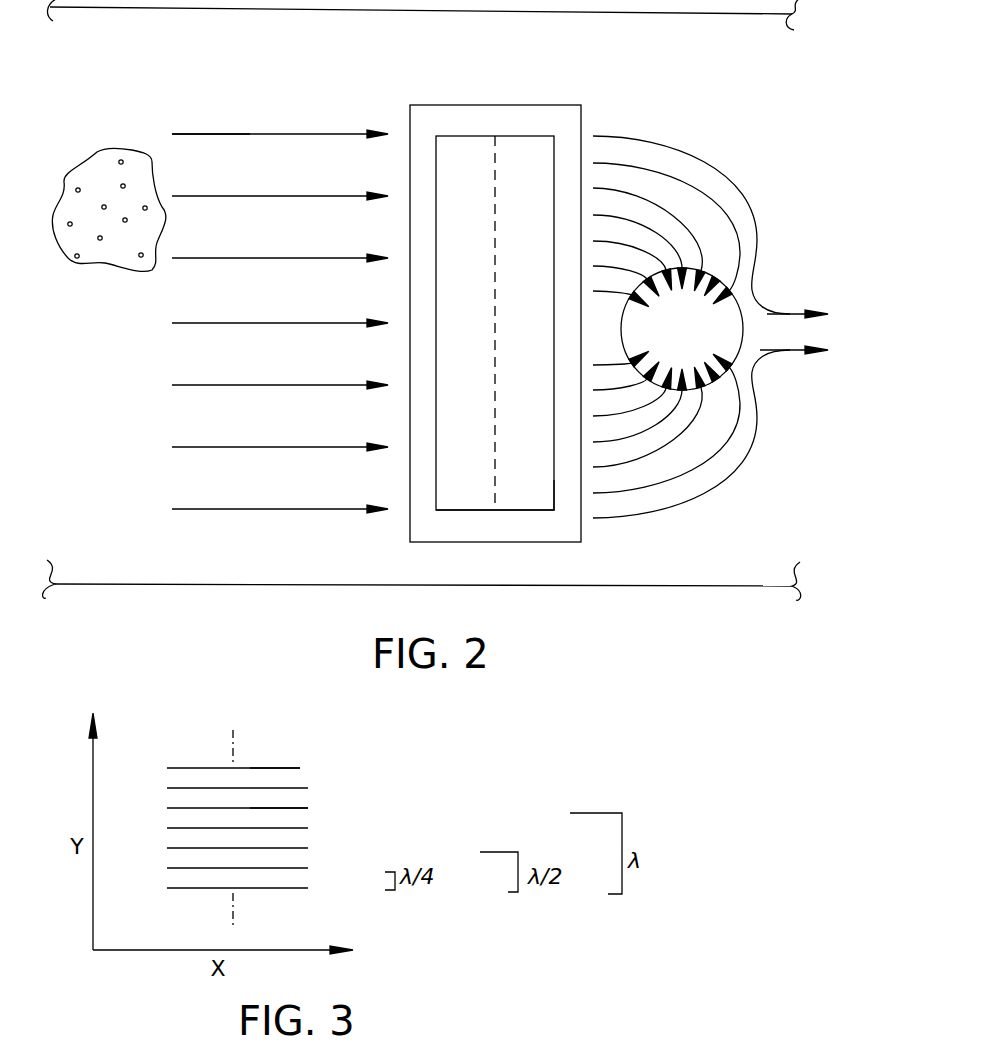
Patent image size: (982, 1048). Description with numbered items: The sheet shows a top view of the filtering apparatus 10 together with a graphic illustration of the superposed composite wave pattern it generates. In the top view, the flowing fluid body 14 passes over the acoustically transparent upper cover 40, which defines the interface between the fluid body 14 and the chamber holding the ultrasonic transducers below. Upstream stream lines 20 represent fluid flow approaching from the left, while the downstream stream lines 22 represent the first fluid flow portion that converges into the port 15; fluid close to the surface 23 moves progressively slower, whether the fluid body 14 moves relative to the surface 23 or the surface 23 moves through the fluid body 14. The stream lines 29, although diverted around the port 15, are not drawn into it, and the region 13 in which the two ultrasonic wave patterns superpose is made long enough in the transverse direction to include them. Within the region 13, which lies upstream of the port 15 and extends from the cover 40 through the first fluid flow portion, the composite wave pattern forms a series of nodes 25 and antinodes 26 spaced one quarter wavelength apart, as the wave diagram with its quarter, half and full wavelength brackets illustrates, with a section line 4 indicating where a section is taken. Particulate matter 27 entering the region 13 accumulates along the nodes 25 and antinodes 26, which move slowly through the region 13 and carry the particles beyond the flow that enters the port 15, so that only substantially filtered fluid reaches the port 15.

In FIG. 2, the filtering apparatus 10 is at (566, 110).
In FIG. 2, the region 13 is at (572, 518).
In FIG. 2, the fluid body 14 is at (625, 136).
In FIG. 2, the port 15 is at (742, 340).
In FIG. 2, the upstream stream lines 20 is at (481, 325).
In FIG. 2, the downstream stream lines 22 is at (735, 304).
In FIG. 2, the surface 23 is at (182, 82).
In FIG. 2, the scattering object 27 is at (97, 152).
In FIG. 2, the stream lines 29 is at (247, 133).
In FIG. 2, the upper cover 40 is at (468, 117).
In FIG. 3, the section line 4 is at (210, 927).
In FIG. 3, the nodes 25 is at (193, 788).
In FIG. 3, the antinodes 26 is at (302, 768).